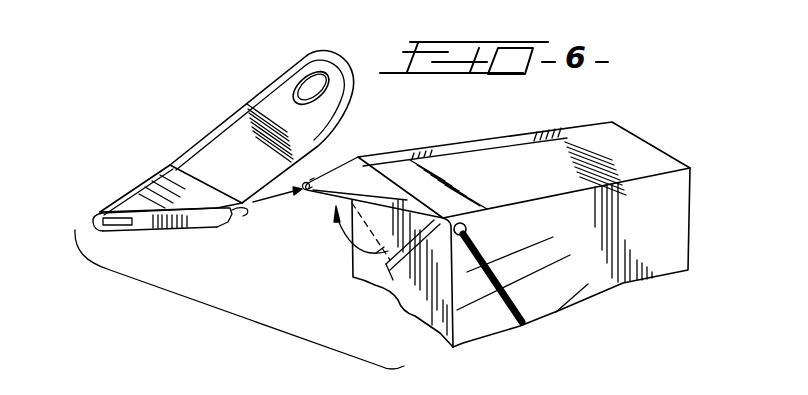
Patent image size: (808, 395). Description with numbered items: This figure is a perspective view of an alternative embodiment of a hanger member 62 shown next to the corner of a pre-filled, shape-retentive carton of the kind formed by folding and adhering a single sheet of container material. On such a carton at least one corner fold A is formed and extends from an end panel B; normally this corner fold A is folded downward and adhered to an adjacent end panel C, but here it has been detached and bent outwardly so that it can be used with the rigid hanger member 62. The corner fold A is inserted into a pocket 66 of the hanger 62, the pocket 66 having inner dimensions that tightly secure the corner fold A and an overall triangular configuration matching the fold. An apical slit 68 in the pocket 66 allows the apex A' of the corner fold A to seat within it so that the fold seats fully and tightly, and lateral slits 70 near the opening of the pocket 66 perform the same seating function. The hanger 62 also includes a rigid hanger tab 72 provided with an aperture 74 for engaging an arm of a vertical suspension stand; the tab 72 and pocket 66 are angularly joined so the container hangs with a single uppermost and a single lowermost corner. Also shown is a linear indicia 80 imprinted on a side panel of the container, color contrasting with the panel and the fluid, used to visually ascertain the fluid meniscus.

The hanger member 62 is at (176, 136).
The pocket 66 is at (238, 212).
The apical slit 68 is at (102, 222).
The lateral slits 70 is at (222, 223).
The hanger tab 72 is at (232, 114).
The aperture 74 is at (315, 97).
The linear indicia 80 is at (482, 265).
The corner fold A is at (300, 227).
The apex A' is at (339, 146).
The end panel B is at (613, 158).
The adjacent end panel C is at (450, 287).